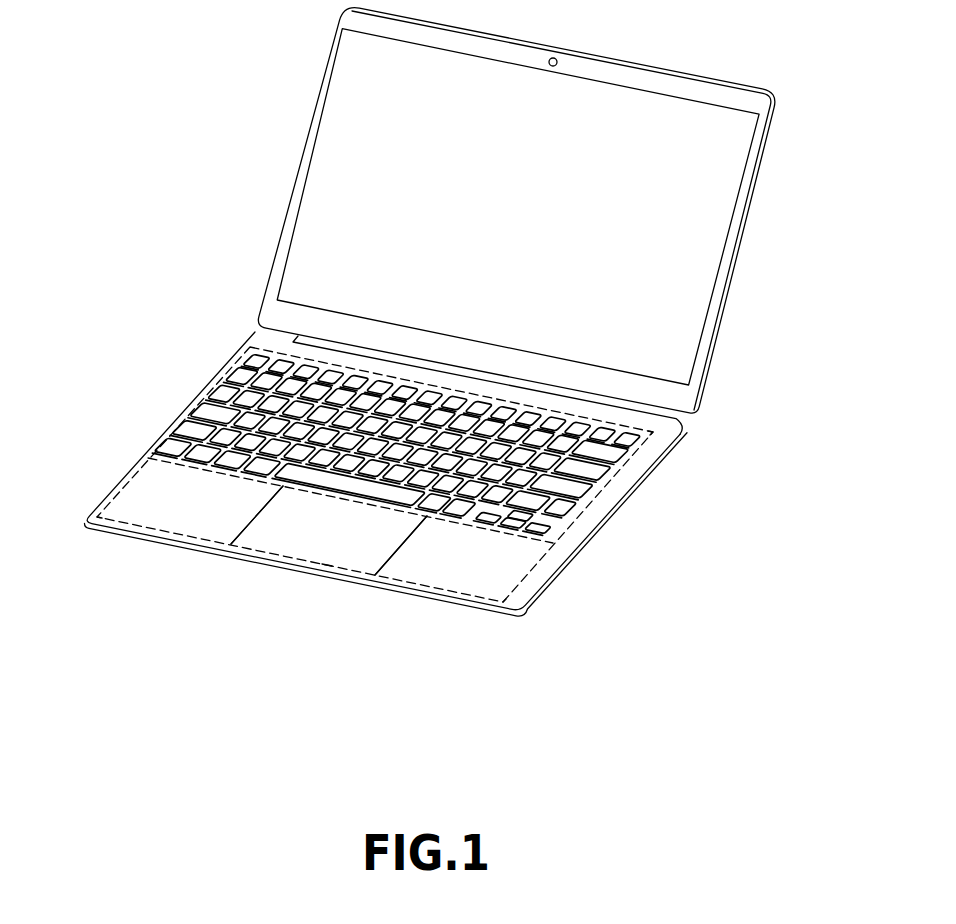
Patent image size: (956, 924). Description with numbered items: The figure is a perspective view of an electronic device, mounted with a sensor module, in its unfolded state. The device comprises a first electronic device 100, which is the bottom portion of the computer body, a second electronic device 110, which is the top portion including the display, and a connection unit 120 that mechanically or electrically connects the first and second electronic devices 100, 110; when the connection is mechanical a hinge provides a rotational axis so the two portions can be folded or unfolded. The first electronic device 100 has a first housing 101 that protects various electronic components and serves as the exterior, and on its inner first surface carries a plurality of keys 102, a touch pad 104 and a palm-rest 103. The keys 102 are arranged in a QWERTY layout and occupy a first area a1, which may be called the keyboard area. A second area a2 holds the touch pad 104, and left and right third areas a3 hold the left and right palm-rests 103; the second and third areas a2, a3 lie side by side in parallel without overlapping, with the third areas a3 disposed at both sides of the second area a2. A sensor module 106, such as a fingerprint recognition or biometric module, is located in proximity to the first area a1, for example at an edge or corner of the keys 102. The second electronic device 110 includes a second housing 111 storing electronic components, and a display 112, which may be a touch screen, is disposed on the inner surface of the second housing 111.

The first electronic device 100 is at (146, 433).
The first housing 101 is at (110, 475).
The plurality of keys 102 is at (265, 418).
The palm-rest 103 is at (193, 514).
The touch pad 104 is at (296, 540).
The sensor module 106 is at (573, 505).
The second electronic device 110 is at (757, 267).
The second housing 111 is at (764, 96).
The display 112 is at (337, 173).
The connection unit 120 is at (347, 350).
The first area a1 is at (683, 430).
The second area a2 is at (330, 567).
The third area a3 is at (122, 523).